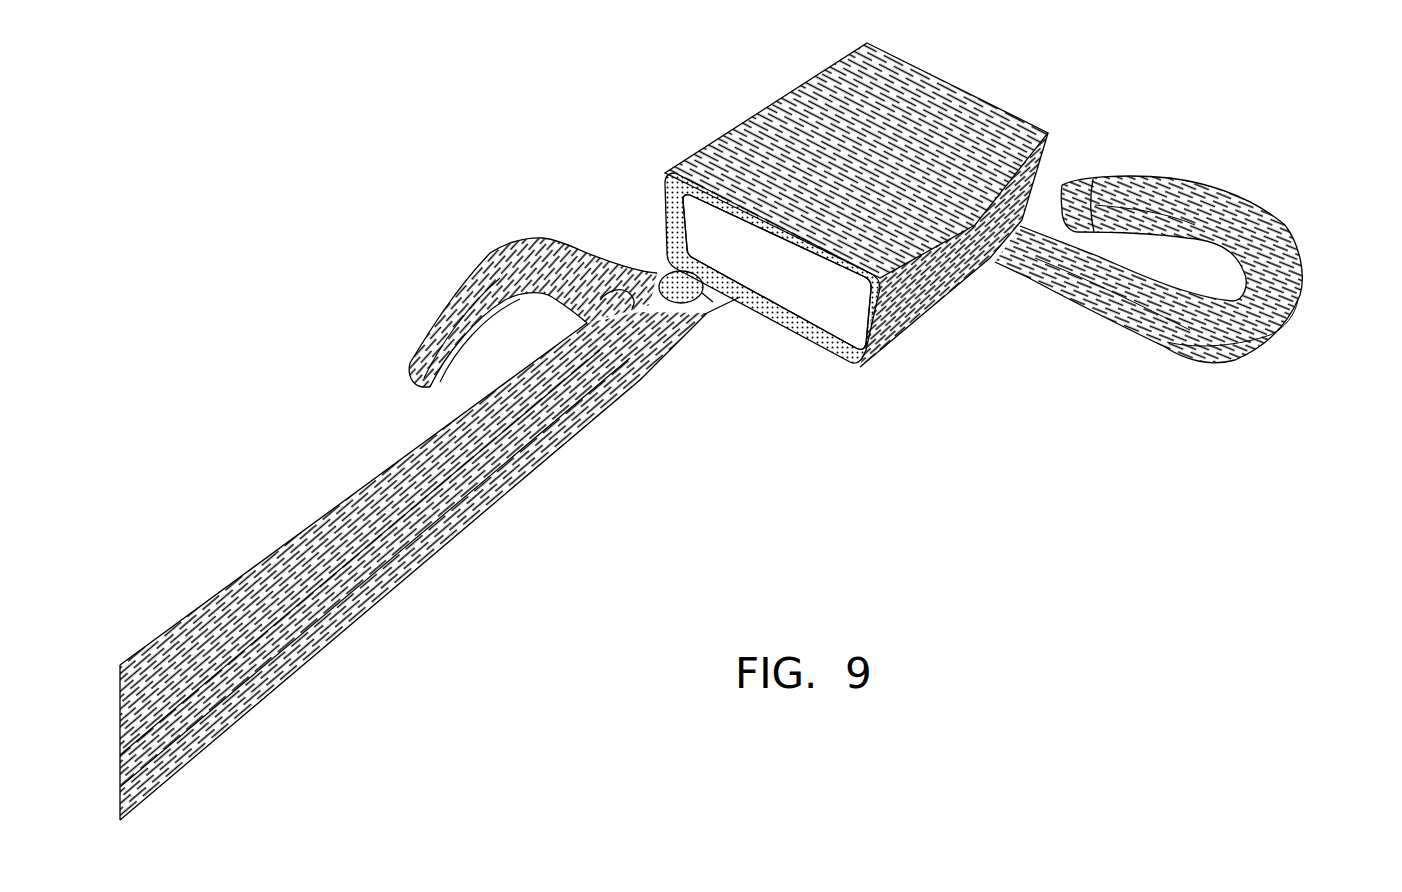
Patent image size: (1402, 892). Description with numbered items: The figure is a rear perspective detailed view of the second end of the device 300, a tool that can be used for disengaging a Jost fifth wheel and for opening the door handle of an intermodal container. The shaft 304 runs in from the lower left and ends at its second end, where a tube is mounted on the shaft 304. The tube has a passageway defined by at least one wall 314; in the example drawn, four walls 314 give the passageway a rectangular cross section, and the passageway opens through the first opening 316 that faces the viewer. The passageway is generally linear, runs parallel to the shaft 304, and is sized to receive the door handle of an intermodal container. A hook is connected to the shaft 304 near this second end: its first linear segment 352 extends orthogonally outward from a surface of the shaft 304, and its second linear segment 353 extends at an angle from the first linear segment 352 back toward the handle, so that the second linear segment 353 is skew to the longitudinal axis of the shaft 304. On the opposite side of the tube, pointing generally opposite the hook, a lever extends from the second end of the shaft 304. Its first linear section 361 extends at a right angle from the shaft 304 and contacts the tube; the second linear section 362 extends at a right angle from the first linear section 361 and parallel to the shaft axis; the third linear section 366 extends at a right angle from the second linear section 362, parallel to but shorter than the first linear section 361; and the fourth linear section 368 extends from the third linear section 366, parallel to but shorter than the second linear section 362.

The device 300 is at (318, 158).
The shaft 304 is at (347, 610).
The wall 314 is at (807, 239).
The first opening 316 is at (767, 273).
The first linear segment 352 is at (535, 281).
The second linear segment 353 is at (443, 333).
The first linear section 361 is at (1123, 307).
The second linear section 362 is at (1178, 270).
The third linear section 366 is at (1253, 223).
The fourth linear section 368 is at (1108, 197).